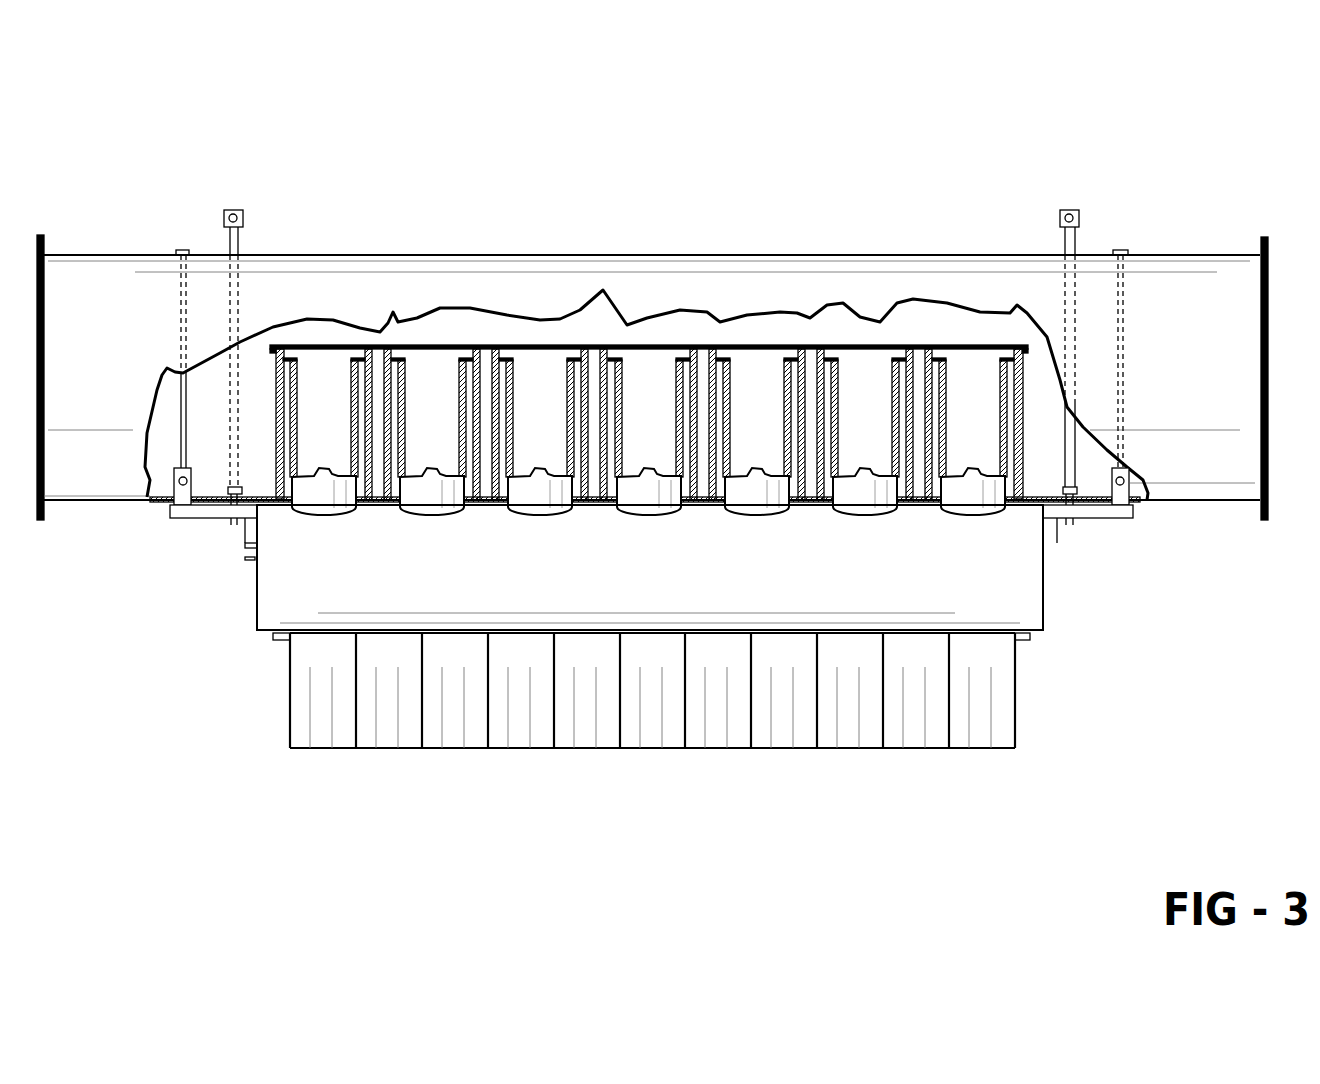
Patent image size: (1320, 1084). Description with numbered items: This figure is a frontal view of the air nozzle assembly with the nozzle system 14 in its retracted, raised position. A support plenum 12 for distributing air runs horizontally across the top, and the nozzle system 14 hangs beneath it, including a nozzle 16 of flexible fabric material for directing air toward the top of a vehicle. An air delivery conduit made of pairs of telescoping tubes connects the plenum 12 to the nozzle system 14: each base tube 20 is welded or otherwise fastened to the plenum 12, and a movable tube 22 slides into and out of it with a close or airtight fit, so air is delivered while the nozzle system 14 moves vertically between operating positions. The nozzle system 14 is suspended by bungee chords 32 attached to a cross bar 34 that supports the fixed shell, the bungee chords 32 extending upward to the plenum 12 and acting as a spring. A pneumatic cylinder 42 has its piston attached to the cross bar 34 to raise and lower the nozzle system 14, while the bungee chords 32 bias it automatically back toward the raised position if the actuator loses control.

The support plenum 12 is at (668, 277).
The nozzle system 14 is at (232, 627).
The nozzle 16 is at (465, 748).
The base tube 20 is at (757, 347).
The movable tube 22 is at (570, 403).
The bungee chords 32 is at (183, 400).
The cross bar 34 is at (190, 518).
The pneumatic cylinder 42 is at (243, 240).